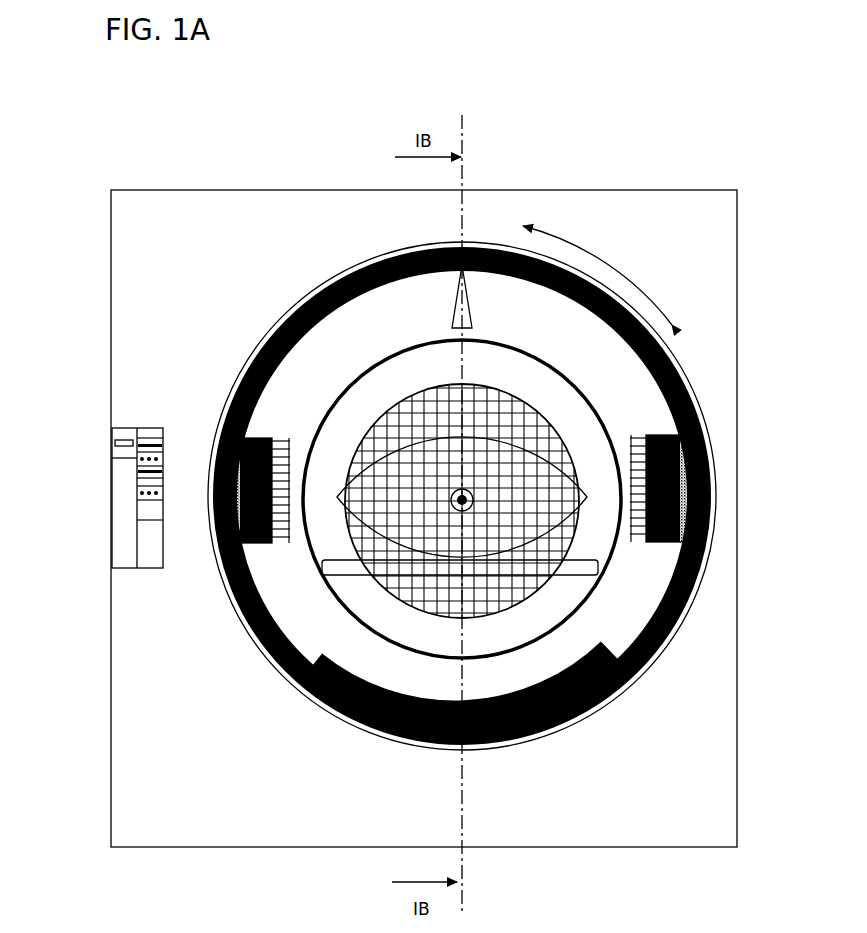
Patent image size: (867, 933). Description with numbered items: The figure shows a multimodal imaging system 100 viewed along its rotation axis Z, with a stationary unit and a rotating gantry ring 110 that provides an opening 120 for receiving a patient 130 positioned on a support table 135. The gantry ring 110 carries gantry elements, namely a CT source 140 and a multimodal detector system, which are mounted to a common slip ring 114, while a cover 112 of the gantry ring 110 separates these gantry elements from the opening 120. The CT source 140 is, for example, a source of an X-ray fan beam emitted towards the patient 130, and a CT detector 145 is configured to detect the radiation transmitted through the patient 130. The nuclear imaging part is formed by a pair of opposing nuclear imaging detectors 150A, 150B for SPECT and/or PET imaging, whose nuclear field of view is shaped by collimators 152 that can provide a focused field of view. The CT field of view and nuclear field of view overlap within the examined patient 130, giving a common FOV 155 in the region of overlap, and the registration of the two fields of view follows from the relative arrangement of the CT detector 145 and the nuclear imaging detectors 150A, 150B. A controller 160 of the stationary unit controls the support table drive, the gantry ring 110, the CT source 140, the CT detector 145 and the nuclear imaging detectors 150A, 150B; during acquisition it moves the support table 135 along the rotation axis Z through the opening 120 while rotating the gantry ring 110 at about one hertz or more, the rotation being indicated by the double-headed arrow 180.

The multimodal imaging system 100 is at (396, 75).
The gantry ring 110 is at (677, 351).
The cover 112 is at (604, 428).
The slip ring 114 is at (685, 377).
The opening 120 is at (354, 600).
The patient 130 is at (392, 405).
The support table 135 is at (578, 578).
The CT source 140 is at (453, 308).
The CT detector 145 is at (422, 745).
The nuclear imaging detector 150A is at (239, 440).
The nuclear imaging detector 150B is at (694, 496).
The collimators 152 is at (639, 556).
The common FOV 155 is at (373, 458).
The controller 160 is at (112, 525).
The double-headed arrow 180 is at (603, 249).
The rotation axis Z is at (450, 503).